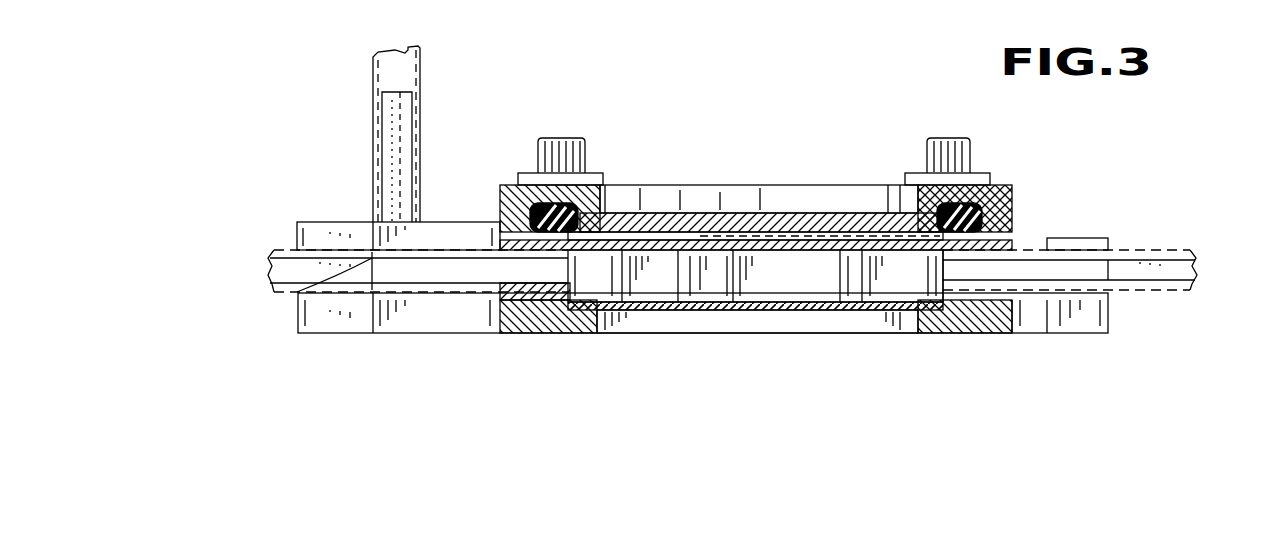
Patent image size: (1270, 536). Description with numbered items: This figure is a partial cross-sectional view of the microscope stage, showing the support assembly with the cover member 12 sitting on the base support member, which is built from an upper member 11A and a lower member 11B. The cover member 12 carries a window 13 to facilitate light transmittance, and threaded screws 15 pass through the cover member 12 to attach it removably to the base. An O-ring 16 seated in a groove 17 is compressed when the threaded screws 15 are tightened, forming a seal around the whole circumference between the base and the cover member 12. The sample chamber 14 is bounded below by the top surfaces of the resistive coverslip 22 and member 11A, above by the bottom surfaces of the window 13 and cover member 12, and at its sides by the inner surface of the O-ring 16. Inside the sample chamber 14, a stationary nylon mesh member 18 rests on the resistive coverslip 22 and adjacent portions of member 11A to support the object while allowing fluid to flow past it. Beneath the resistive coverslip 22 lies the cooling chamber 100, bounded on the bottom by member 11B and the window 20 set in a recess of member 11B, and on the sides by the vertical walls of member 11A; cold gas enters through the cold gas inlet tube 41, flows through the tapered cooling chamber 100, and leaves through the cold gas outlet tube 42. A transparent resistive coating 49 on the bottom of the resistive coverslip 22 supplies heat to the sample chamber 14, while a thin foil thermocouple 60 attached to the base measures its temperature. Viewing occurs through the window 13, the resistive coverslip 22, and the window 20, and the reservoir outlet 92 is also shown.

The outlet 92 is at (378, 152).
The threaded screws 15 is at (545, 140).
The cover member 12 is at (500, 185).
The thermocouple 60 is at (720, 236).
The stationary nylon mesh member 18 is at (772, 242).
The sample chamber 14 is at (794, 213).
The window 13 is at (820, 222).
The groove 17 is at (1005, 183).
The O-ring 16 is at (1008, 207).
The member 11A is at (1014, 243).
The member 11B is at (1075, 330).
The cold gas outlet tube 42 is at (1160, 250).
The cold gas inlet tube 41 is at (297, 292).
The window 20 is at (630, 318).
The transparent resistive coating 49 is at (716, 258).
The cooling chamber 100 is at (780, 272).
The resistive coverslip 22 is at (860, 256).